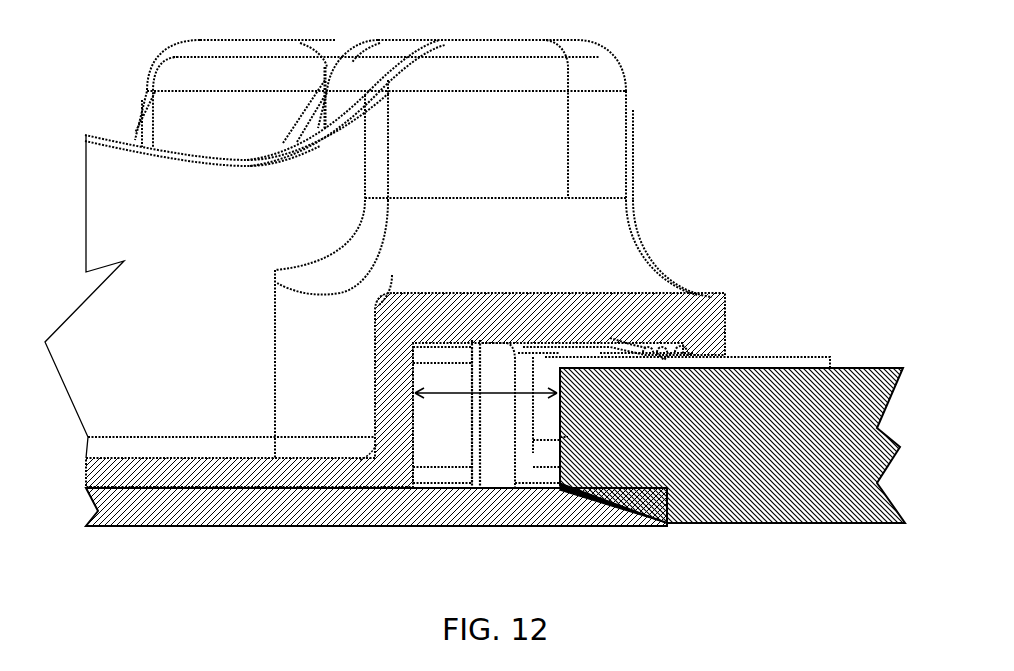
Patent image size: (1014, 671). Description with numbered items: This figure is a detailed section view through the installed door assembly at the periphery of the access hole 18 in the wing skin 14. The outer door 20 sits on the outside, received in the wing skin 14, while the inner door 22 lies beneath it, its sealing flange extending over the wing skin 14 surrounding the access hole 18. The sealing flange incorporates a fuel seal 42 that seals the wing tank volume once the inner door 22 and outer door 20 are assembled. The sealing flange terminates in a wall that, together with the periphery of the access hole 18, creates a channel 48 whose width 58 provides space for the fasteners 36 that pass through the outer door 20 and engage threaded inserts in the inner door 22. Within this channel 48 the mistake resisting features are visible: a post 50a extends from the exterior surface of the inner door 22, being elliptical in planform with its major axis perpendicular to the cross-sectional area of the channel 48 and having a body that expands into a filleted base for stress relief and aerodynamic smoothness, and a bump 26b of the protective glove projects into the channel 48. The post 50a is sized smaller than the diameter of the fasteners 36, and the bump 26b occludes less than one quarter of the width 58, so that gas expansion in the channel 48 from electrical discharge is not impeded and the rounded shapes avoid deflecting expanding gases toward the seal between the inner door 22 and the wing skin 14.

The inner door 22 is at (185, 458).
The fasteners 36 is at (490, 370).
The width 58 is at (533, 390).
The fuel seal 42 is at (670, 357).
The wing skin 14 is at (735, 490).
The outer door 20 is at (220, 517).
The channel 48 is at (437, 425).
The post 50a is at (510, 398).
The bump 26b is at (533, 438).
The access hole 18 is at (560, 437).